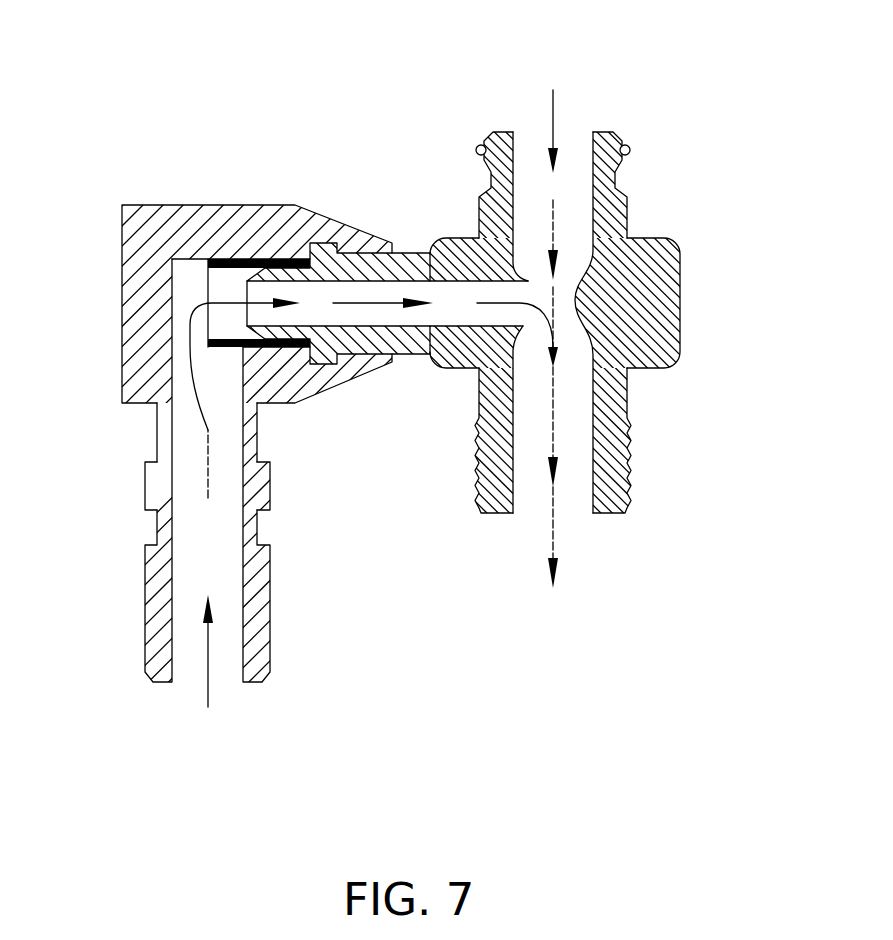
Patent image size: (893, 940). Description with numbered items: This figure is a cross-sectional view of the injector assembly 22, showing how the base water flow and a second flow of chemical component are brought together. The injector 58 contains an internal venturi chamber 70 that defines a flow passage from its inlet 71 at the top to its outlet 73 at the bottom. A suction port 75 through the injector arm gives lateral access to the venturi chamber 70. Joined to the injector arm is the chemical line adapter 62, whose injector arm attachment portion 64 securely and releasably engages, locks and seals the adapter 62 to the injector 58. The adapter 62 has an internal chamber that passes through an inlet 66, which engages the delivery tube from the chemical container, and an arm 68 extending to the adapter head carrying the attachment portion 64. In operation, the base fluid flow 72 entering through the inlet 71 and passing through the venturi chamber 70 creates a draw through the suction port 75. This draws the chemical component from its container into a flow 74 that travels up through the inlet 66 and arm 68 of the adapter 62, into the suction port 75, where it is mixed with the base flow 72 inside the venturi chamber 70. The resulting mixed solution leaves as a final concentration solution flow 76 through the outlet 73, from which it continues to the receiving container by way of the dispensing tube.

The injector assembly 22 is at (179, 101).
The injector 58 is at (697, 317).
The adapter 62 is at (89, 227).
The injector arm attachment portion 64 is at (361, 200).
The inlet 66 is at (150, 700).
The arm 68 is at (145, 488).
The venturi chamber 70 is at (587, 238).
The inlet 71 is at (588, 118).
The base fluid flow 72 is at (552, 214).
The outlet 73 is at (522, 530).
The flow 74 is at (205, 586).
The suction port 75 is at (444, 312).
The final concentration solution flow 76 is at (571, 477).